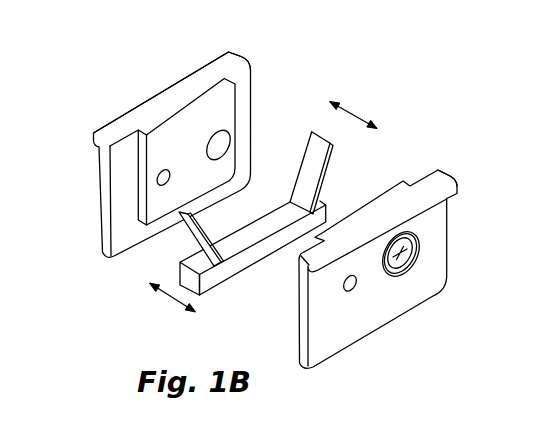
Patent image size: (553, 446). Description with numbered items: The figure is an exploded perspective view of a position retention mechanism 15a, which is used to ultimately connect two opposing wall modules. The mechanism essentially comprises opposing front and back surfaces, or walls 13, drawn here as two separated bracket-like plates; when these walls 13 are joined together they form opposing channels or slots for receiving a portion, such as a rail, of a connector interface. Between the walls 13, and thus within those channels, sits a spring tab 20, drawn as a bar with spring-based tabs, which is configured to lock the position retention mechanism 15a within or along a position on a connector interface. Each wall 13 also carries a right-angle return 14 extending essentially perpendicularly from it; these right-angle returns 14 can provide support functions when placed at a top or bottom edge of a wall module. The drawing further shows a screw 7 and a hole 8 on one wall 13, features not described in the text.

The wall 13 is at (248, 232).
The right-angle return 14 is at (153, 112).
The position retention mechanism 15a is at (386, 76).
The spring tab 20 is at (247, 289).
The screw 7 is at (424, 286).
The hole 8 is at (352, 314).